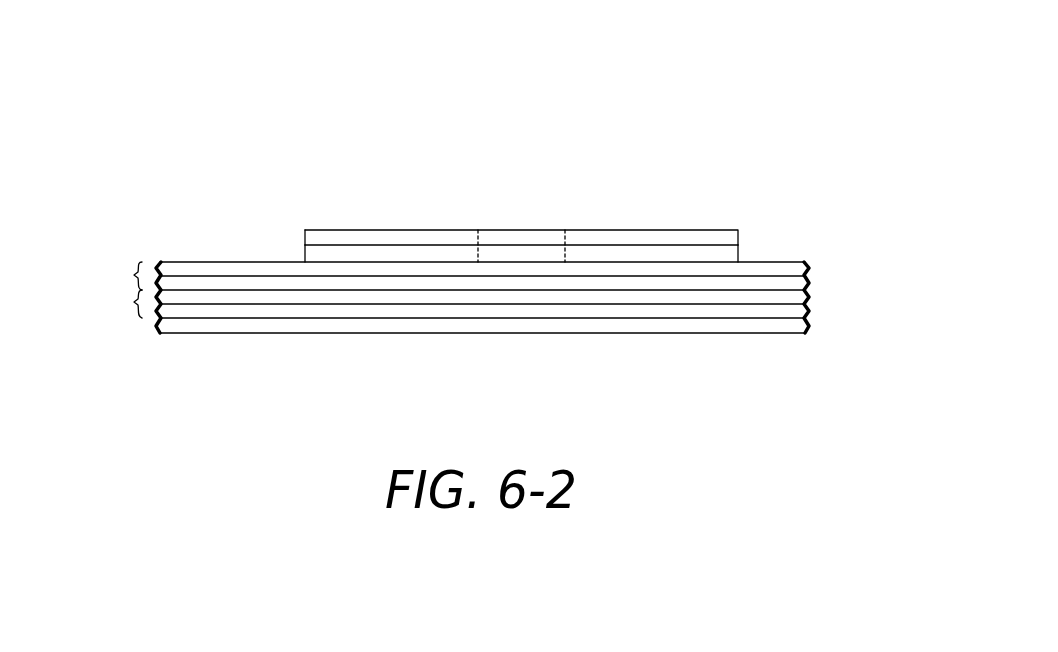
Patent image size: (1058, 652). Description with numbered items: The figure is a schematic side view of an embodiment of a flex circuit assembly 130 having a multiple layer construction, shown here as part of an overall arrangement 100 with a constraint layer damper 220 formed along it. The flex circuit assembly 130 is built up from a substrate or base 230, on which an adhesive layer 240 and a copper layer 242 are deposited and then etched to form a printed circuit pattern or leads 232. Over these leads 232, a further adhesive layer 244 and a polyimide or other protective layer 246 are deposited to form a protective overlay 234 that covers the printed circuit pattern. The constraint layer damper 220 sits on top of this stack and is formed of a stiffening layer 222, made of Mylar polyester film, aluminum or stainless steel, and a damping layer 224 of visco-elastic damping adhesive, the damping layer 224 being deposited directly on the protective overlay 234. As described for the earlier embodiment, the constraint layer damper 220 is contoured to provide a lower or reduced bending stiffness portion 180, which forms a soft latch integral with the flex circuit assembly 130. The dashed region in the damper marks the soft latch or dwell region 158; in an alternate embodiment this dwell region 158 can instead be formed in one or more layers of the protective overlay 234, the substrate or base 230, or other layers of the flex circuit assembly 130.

The battery / electrochemical device 100 is at (498, 212).
The flex circuit assembly 130 is at (498, 263).
The soft latch or dwell region 158 is at (523, 238).
The reduced bending stiffness portion 180 is at (566, 192).
The constraint layer damper 220 is at (557, 188).
The stiffening layer 222 is at (738, 235).
The damping layer 224 is at (738, 251).
The substrate or base 230 is at (157, 334).
The printed circuit pattern or leads 232 is at (135, 302).
The protective overlay 234 is at (135, 275).
The adhesive layer 240 is at (805, 312).
The copper layer 242 is at (805, 300).
The adhesive layer 244 is at (805, 285).
The polyimide or other protective layer 246 is at (805, 266).